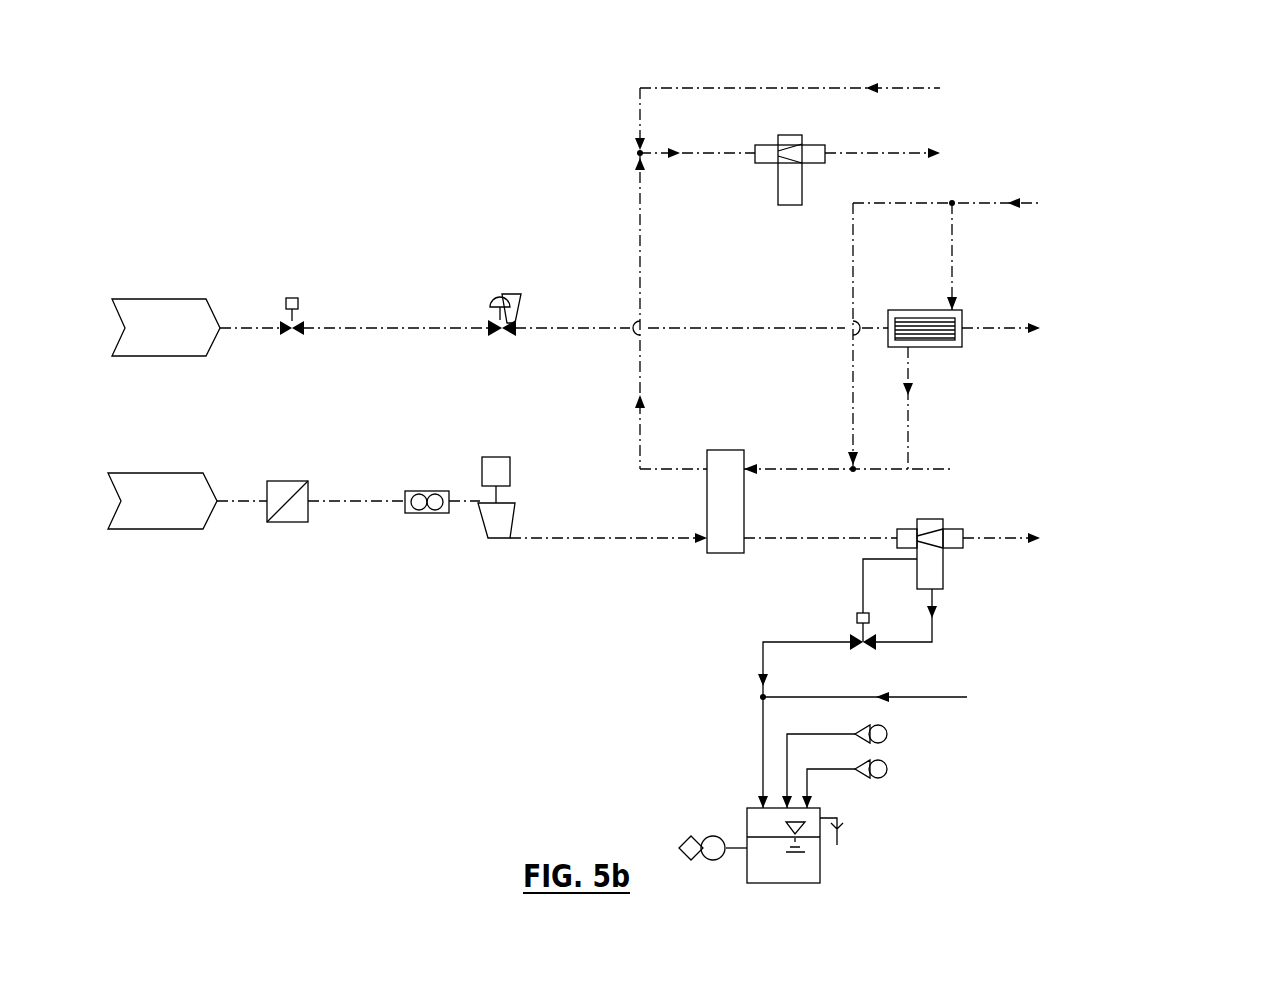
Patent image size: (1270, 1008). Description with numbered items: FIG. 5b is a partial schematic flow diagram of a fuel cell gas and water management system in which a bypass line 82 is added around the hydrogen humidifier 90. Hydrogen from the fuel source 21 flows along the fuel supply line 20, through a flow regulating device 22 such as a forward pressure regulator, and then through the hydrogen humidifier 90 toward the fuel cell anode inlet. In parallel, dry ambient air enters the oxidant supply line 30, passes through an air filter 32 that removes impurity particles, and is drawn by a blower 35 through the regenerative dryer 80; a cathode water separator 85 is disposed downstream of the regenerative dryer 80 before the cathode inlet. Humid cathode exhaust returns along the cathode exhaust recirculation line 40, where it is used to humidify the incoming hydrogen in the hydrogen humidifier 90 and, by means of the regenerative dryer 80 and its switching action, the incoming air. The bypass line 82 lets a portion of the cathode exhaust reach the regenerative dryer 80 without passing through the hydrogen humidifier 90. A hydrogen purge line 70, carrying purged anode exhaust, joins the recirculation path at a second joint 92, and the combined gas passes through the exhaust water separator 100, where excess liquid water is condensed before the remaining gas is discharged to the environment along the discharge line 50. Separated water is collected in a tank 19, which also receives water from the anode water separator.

The second tank 19 is at (818, 866).
The fuel supply line 20 is at (345, 328).
The fuel source 21 is at (192, 318).
The flow regulating device 22 is at (520, 296).
The oxidant supply line 30 is at (233, 505).
The air filter 32 is at (293, 512).
The blower 35 is at (491, 525).
The cathode exhaust recirculation line 40 is at (984, 203).
The discharge line 50 is at (860, 153).
The hydrogen purge line 70 is at (904, 88).
The regenerative dryer 80 is at (710, 540).
The bypass line 82 is at (853, 413).
The cathode water separator 85 is at (935, 577).
The hydrogen humidifier 90 is at (942, 338).
The second joint 92 is at (638, 153).
The exhaust water separator 100 is at (786, 183).